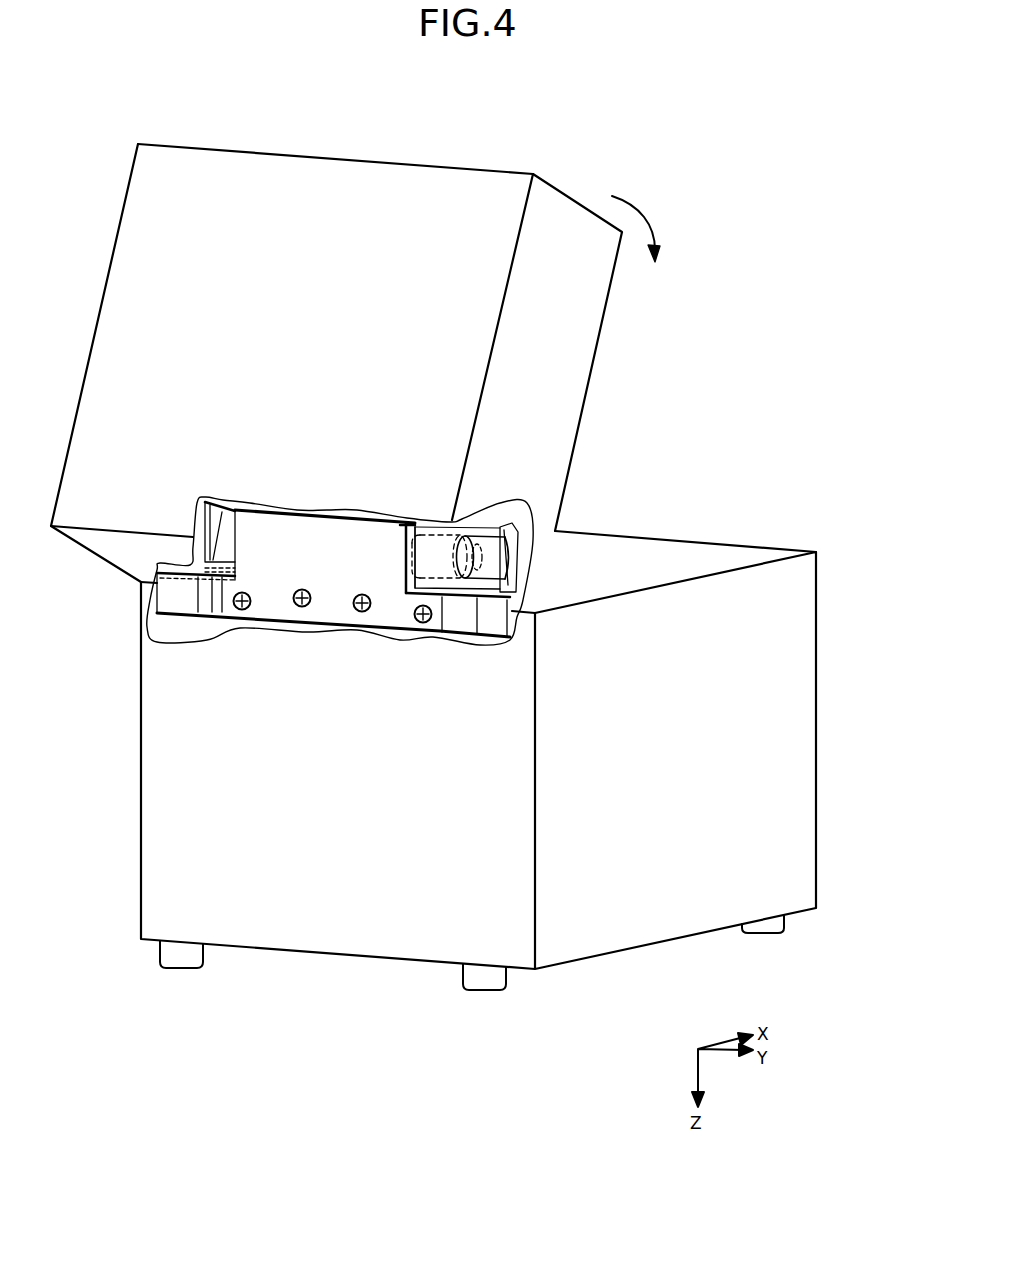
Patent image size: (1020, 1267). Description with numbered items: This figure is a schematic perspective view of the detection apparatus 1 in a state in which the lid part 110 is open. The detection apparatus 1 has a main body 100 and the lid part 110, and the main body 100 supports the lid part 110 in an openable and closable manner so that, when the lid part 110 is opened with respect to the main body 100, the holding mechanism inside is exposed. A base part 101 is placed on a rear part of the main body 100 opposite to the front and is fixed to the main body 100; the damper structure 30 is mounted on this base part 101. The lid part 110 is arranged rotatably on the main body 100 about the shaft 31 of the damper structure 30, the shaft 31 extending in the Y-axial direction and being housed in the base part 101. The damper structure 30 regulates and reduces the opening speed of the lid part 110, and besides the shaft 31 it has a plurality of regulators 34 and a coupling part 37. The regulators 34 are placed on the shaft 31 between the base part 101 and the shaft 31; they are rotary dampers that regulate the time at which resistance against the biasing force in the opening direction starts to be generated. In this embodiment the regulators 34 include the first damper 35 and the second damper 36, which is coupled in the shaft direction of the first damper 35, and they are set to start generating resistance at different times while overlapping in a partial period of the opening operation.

The detection apparatus 1 is at (700, 133).
The lid part 110 is at (345, 182).
The main body 100 is at (797, 657).
The damper structure 30 is at (292, 649).
The base part 101 is at (272, 603).
The coupling part 37 is at (435, 553).
The first damper 35 is at (460, 522).
The regulators 34 is at (457, 527).
The second damper 36 is at (488, 547).
The shaft 31 is at (523, 565).